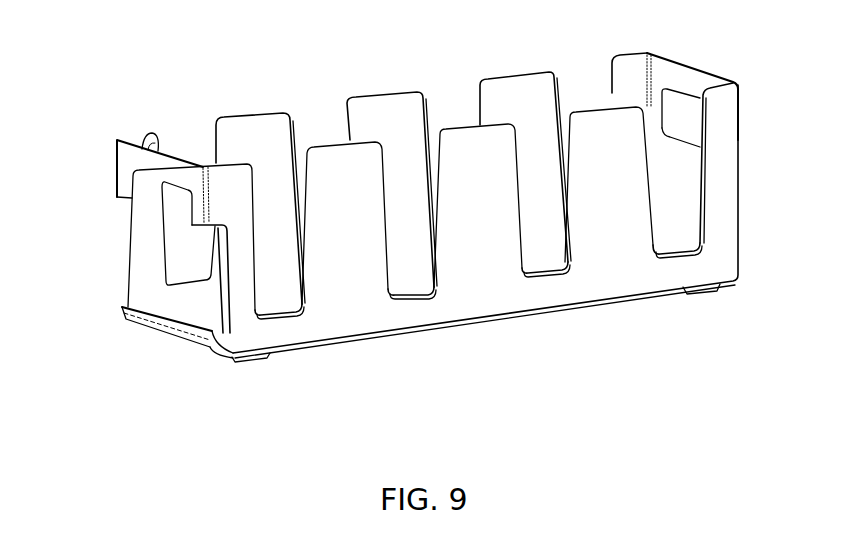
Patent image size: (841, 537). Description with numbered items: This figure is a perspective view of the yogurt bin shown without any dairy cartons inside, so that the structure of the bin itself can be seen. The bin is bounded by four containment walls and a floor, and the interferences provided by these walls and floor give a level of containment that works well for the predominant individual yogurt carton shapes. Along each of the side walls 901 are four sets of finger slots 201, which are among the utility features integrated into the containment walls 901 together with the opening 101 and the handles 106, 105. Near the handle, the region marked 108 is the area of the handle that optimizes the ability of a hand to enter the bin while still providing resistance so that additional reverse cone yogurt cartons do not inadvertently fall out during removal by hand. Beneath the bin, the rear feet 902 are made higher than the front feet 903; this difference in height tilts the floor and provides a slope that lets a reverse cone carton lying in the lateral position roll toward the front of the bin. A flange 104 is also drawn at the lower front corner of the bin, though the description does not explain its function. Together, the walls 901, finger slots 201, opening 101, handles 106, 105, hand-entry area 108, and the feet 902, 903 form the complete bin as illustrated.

The opening 101 is at (130, 253).
The flange 104 is at (138, 336).
The handle 105 is at (148, 136).
The handle 106 is at (671, 102).
The handle area 108 is at (118, 197).
The finger slots 201 is at (196, 143).
The side wall 901 is at (742, 177).
The rear feet 902 is at (717, 295).
The front feet 903 is at (263, 364).